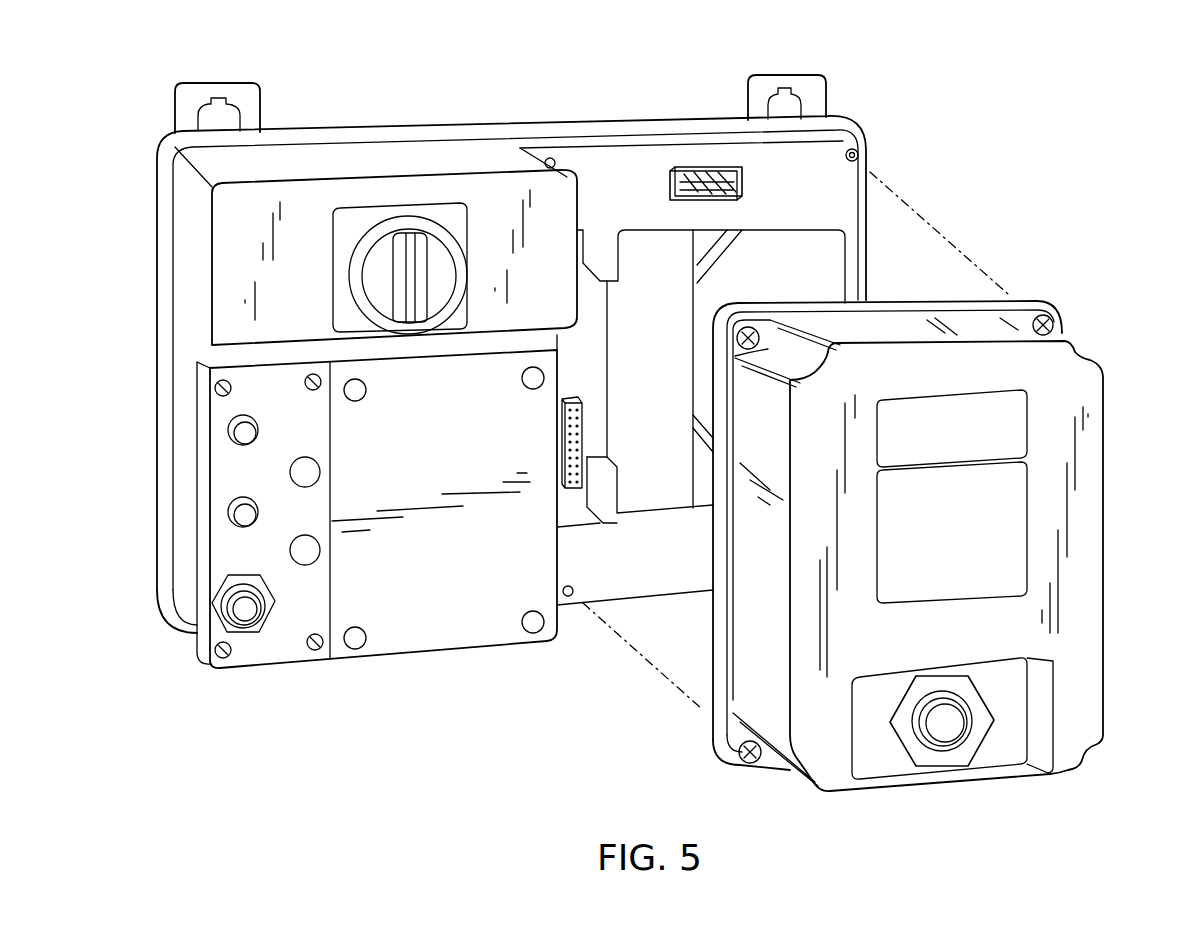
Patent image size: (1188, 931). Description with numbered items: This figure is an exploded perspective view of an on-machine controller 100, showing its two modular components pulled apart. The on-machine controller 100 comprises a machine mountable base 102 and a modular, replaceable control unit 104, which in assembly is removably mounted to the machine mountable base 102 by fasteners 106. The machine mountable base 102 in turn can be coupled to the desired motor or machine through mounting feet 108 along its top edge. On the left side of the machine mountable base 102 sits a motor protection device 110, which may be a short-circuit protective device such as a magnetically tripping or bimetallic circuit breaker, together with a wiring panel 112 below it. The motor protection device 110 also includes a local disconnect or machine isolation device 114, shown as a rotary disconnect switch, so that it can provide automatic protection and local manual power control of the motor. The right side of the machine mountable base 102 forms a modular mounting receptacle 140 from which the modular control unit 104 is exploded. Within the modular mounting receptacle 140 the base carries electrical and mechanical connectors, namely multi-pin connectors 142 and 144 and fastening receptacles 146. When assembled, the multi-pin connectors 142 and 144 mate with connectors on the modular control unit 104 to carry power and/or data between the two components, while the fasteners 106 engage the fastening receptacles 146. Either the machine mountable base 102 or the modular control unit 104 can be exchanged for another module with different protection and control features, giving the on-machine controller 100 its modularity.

The on-machine controller 100 is at (1027, 76).
The machine mountable base 102 is at (627, 118).
The modular control unit 104 is at (1073, 281).
The fasteners 106 is at (1058, 318).
The mounting feet 108 is at (218, 82).
The motor protection device 110 is at (320, 163).
The wiring panel 112 is at (283, 667).
The machine isolation device 114 is at (437, 250).
The modular mounting receptacle 140 is at (820, 160).
The multi-pin connector 142 is at (688, 167).
The multi-pin connector 144 is at (565, 437).
The fastening receptacles 146 is at (550, 160).